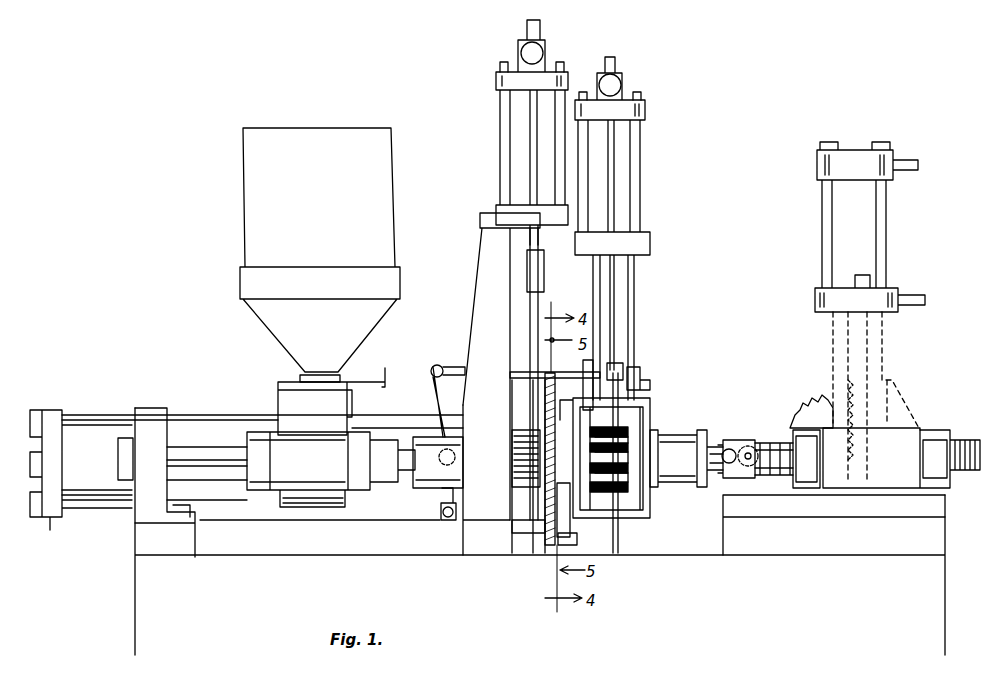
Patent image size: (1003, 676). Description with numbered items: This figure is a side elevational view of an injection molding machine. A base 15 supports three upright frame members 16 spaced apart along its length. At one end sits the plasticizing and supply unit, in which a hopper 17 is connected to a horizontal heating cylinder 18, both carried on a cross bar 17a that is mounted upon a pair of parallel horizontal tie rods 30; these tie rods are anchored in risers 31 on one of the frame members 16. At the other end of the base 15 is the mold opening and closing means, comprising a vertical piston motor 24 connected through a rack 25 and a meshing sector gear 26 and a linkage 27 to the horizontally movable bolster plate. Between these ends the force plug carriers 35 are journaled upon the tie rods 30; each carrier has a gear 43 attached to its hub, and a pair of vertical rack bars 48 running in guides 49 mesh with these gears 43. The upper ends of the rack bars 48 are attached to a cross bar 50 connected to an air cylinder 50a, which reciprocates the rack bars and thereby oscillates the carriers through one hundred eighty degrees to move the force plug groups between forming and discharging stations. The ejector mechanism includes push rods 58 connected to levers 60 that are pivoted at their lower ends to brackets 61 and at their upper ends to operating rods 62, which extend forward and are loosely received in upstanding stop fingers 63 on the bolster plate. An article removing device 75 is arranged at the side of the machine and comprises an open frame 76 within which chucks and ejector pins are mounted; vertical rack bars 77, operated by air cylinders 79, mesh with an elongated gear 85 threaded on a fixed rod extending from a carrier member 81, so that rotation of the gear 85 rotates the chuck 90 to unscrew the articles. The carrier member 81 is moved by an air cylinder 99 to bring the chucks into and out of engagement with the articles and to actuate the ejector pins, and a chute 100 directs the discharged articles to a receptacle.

The base 15 is at (790, 581).
The upright frame members 16 is at (140, 537).
The hopper 17 is at (322, 173).
The cross bar 17a is at (290, 470).
The heating cylinder 18 is at (392, 407).
The vertical piston motor 24 is at (862, 232).
The rack 25 is at (845, 368).
The sector gear 26 is at (815, 395).
The linkage 27 is at (737, 432).
The tie rods 30 is at (213, 457).
The risers 31 is at (908, 430).
The force plug carriers 35 is at (549, 390).
The gear 43 is at (512, 458).
The vertical rack bars 48 is at (537, 303).
The guides 49 is at (531, 527).
The cross bar 50 is at (527, 262).
The air cylinder 50a is at (514, 133).
The push rods 58 is at (466, 448).
The levers 60 is at (443, 393).
The brackets 61 is at (440, 508).
The operating rods 62 is at (463, 358).
The stop fingers 63 is at (587, 360).
The article removing device 75 is at (661, 398).
The open frame 76 is at (640, 512).
The vertical rack bars 77 is at (620, 535).
The air cylinders 79 is at (630, 187).
The carrier member 81 is at (637, 495).
The elongated gear 85 is at (635, 425).
The chuck 90 is at (562, 490).
The air cylinder 99 is at (686, 440).
The chute 100 is at (575, 540).